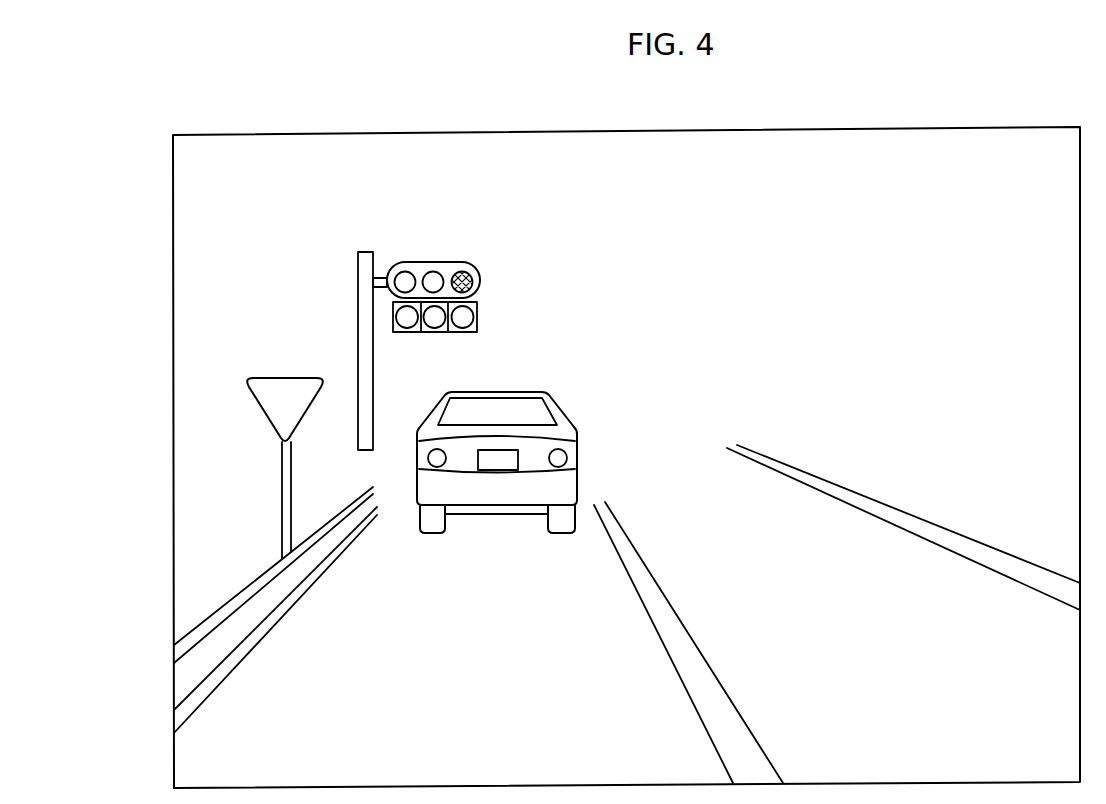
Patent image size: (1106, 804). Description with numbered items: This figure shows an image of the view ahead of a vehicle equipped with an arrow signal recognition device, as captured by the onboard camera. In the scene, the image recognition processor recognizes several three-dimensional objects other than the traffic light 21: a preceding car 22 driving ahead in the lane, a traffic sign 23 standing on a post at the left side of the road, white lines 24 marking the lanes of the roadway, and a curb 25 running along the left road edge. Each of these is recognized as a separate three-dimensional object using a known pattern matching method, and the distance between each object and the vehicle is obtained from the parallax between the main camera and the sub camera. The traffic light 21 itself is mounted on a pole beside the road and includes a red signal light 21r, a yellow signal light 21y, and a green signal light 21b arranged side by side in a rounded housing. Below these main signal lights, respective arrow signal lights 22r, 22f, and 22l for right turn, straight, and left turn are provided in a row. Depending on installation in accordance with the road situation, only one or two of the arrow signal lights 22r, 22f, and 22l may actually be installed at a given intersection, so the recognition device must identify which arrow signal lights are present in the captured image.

The traffic light 21 is at (467, 260).
The green signal light 21b is at (404, 271).
The yellow signal light 21y is at (433, 271).
The red signal light 21r is at (474, 282).
The preceding car 22 is at (563, 412).
The arrow signal light for right turn 22r is at (478, 318).
The arrow signal light for left turn 22l is at (404, 328).
The arrow signal light for straight 22f is at (435, 328).
The traffic sign 23 is at (270, 415).
The white line 24 is at (298, 602).
The curb 25 is at (223, 603).